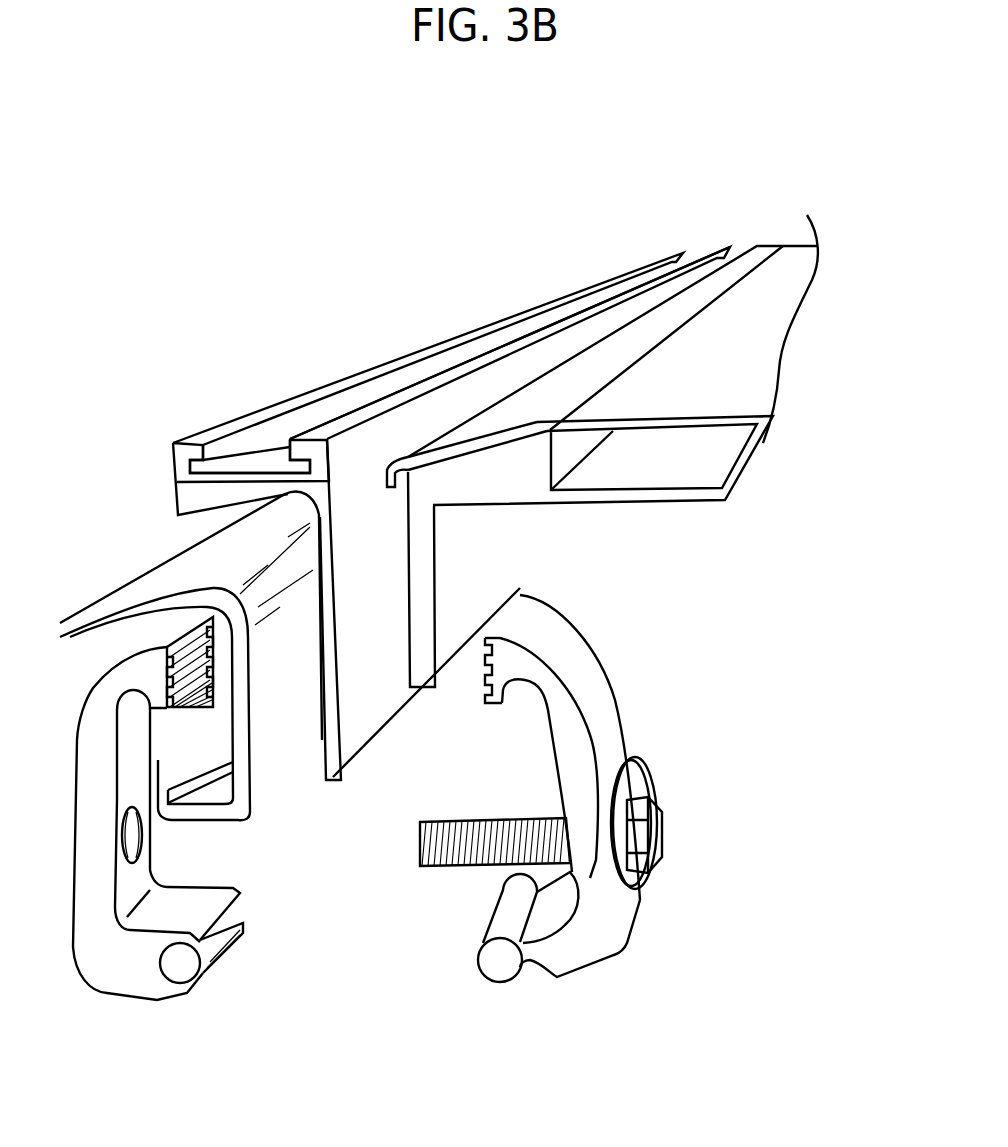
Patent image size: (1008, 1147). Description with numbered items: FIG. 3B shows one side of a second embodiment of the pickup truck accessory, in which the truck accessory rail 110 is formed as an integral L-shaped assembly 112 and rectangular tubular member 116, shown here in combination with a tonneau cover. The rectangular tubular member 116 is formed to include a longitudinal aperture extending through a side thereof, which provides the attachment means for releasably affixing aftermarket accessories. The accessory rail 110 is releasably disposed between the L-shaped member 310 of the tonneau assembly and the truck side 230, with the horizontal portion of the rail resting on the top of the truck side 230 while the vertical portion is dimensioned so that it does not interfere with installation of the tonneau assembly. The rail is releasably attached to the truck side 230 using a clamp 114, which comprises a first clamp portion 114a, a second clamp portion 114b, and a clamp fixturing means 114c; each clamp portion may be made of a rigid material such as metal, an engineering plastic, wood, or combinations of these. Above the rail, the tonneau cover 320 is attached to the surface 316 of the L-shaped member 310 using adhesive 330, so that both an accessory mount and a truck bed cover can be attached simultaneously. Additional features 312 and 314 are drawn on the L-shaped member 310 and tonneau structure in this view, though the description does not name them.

The truck accessory rail 110 is at (350, 312).
The L-shaped assembly 112 is at (389, 578).
The clamp 114 is at (643, 923).
The first clamp portion 114a is at (612, 683).
The second clamp portion 114b is at (237, 897).
The clamp fixturing means 114c is at (660, 840).
The rectangular tubular member 116 is at (282, 453).
The truck side 230 is at (175, 558).
The L-shaped member 310 is at (423, 697).
The plate 312 is at (492, 578).
The block 314 is at (681, 508).
The surface 316 is at (513, 504).
The cover 320 is at (750, 362).
The adhesive 330 is at (513, 500).